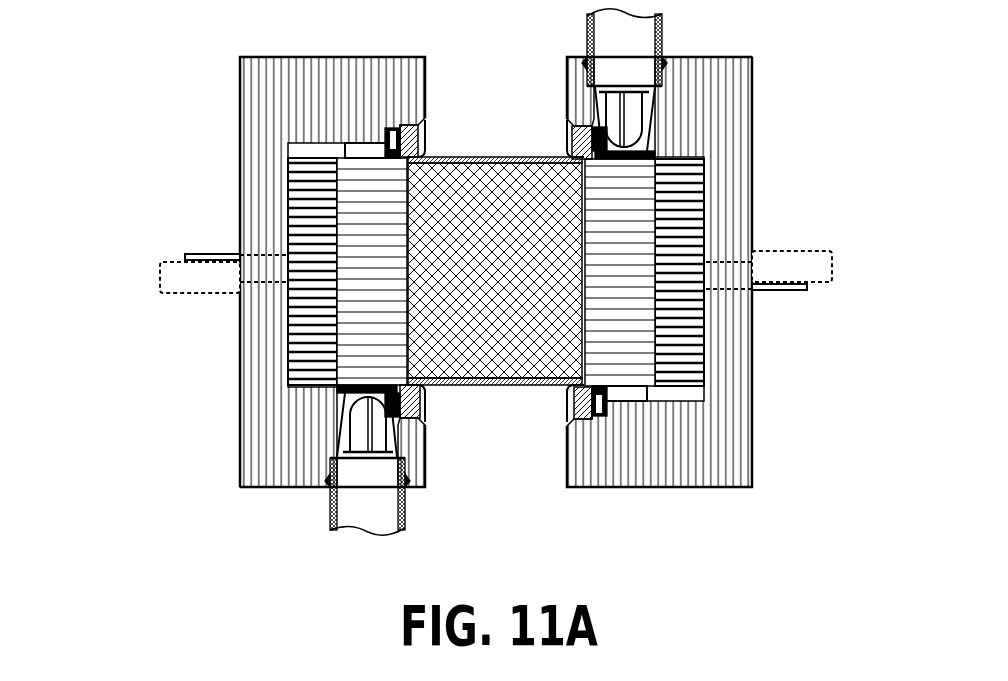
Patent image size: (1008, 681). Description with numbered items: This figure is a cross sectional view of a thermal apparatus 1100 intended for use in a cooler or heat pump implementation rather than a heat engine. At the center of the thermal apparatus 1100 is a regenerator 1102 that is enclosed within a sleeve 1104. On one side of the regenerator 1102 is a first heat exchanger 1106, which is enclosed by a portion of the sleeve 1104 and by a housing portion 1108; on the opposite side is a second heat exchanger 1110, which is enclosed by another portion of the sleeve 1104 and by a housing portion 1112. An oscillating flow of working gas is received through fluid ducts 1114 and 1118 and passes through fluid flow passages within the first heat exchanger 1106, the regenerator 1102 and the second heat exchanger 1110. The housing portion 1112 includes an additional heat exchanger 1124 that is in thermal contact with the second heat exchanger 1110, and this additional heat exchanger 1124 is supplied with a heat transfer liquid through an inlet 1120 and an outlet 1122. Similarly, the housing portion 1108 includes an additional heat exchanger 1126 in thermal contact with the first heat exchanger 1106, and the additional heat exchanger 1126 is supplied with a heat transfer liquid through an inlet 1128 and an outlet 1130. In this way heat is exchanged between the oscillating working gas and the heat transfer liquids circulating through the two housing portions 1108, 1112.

The thermal apparatus 1100 is at (128, 46).
The regenerator 1102 is at (540, 367).
The sleeve 1104 is at (512, 160).
The first heat exchanger 1106 is at (390, 380).
The housing portion 1108 is at (355, 62).
The second heat exchanger 1110 is at (630, 370).
The housing portion 1112 is at (738, 95).
The fluid duct 1114 is at (662, 30).
The fluid duct 1118 is at (330, 505).
The inlet 1120 is at (807, 293).
The outlet 1122 is at (797, 253).
The additional heat exchanger 1124 is at (710, 212).
The additional heat exchanger 1126 is at (302, 210).
The inlet 1128 is at (187, 255).
The outlet 1130 is at (200, 295).